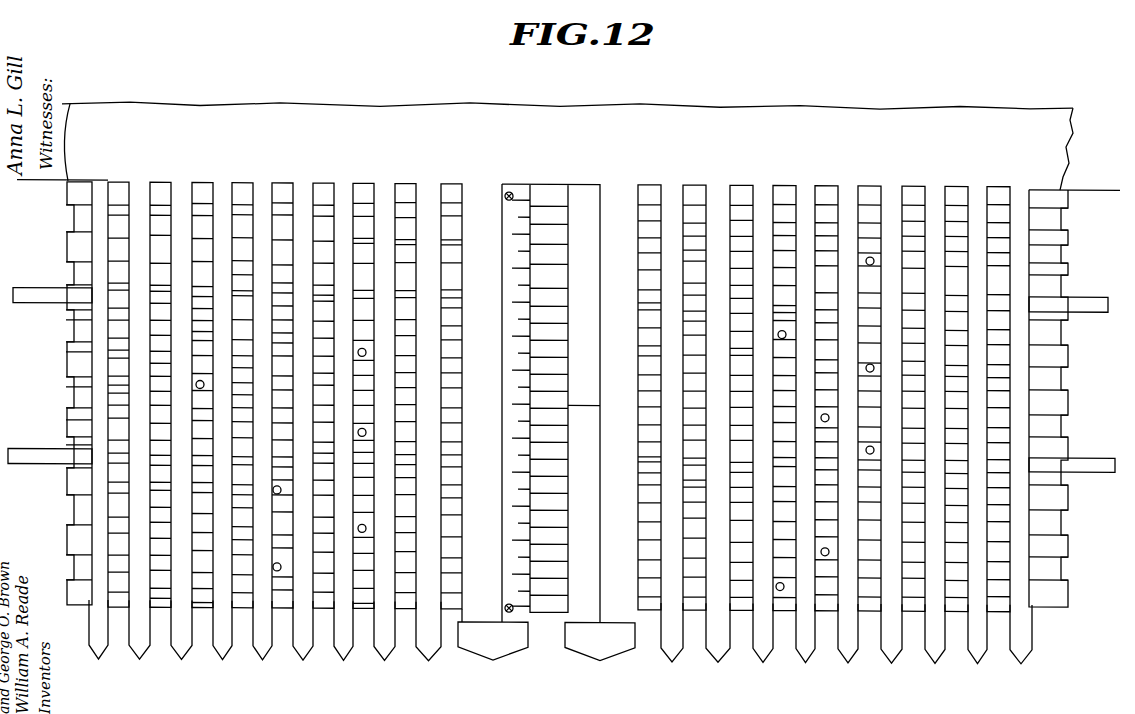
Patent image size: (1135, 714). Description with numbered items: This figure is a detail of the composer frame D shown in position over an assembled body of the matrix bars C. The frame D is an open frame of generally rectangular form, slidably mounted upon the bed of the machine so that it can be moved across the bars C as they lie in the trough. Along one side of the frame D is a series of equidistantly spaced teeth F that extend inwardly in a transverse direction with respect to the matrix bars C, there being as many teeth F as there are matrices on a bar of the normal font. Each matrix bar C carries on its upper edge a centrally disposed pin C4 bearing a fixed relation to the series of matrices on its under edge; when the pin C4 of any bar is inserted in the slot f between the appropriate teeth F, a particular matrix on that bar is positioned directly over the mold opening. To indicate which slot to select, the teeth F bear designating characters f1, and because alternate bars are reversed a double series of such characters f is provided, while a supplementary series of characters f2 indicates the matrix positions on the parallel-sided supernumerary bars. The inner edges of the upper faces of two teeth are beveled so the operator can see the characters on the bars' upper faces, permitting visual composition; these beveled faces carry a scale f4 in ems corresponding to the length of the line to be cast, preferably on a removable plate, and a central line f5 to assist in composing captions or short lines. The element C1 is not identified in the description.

The composer frame D is at (567, 145).
The matrix bars C is at (67, 223).
The center scale/guide strip C1 is at (542, 203).
The pin C4 is at (204, 383).
The teeth F is at (843, 216).
The slot between teeth f is at (317, 638).
The designating characters f1 is at (218, 648).
The supplementary series of characters f2 is at (113, 610).
The em scale f4 is at (510, 540).
The central line f5 is at (588, 406).